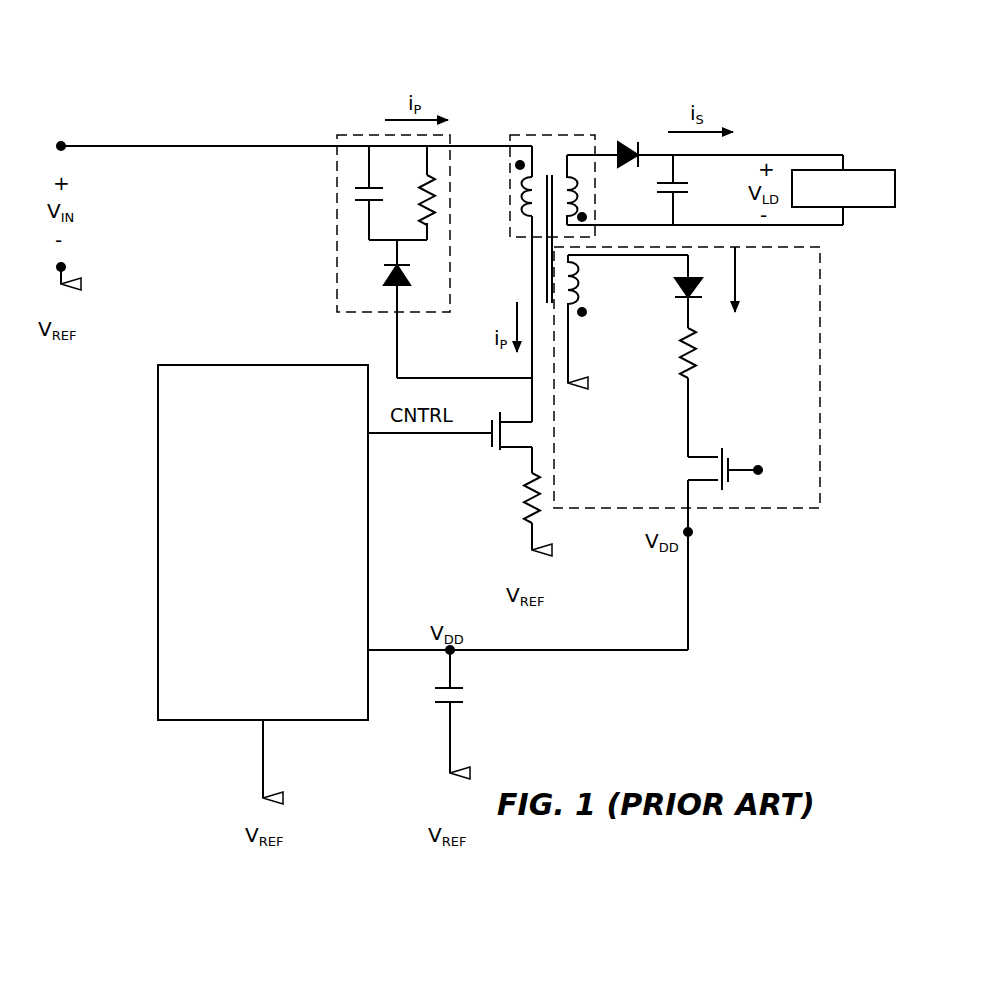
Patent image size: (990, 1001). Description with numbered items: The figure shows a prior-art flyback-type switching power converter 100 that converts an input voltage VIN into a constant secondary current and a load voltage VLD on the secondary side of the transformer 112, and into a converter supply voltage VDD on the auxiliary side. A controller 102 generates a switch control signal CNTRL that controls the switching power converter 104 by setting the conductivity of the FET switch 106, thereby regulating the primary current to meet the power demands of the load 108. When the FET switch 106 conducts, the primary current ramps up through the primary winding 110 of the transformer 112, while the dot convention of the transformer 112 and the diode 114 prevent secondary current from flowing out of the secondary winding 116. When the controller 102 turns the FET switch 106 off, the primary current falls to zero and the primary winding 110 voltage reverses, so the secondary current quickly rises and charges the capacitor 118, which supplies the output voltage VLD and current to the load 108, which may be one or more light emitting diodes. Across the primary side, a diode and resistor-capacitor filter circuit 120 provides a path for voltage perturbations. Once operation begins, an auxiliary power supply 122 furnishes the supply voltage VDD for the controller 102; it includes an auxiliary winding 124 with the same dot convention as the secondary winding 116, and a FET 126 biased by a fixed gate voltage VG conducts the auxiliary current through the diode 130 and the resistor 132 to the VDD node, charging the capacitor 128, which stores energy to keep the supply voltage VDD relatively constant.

The flyback-type switching power converter 100 is at (905, 115).
The controller 102 is at (263, 542).
The switching power converter 104 is at (725, 92).
The FET switch 106 is at (497, 456).
The load 108 is at (895, 190).
The primary winding 110 is at (522, 183).
The transformer 112 is at (515, 133).
The diode 114 is at (622, 145).
The secondary winding 116 is at (585, 217).
The capacitor 118 is at (690, 186).
The diode and resistor-capacitor filter circuit 120 is at (337, 250).
The auxiliary power supply 122 is at (727, 377).
The auxiliary winding 124 is at (577, 296).
The FET 126 is at (725, 456).
The capacitor 128 is at (458, 706).
The diode 130 is at (680, 290).
The resistor 132 is at (697, 355).